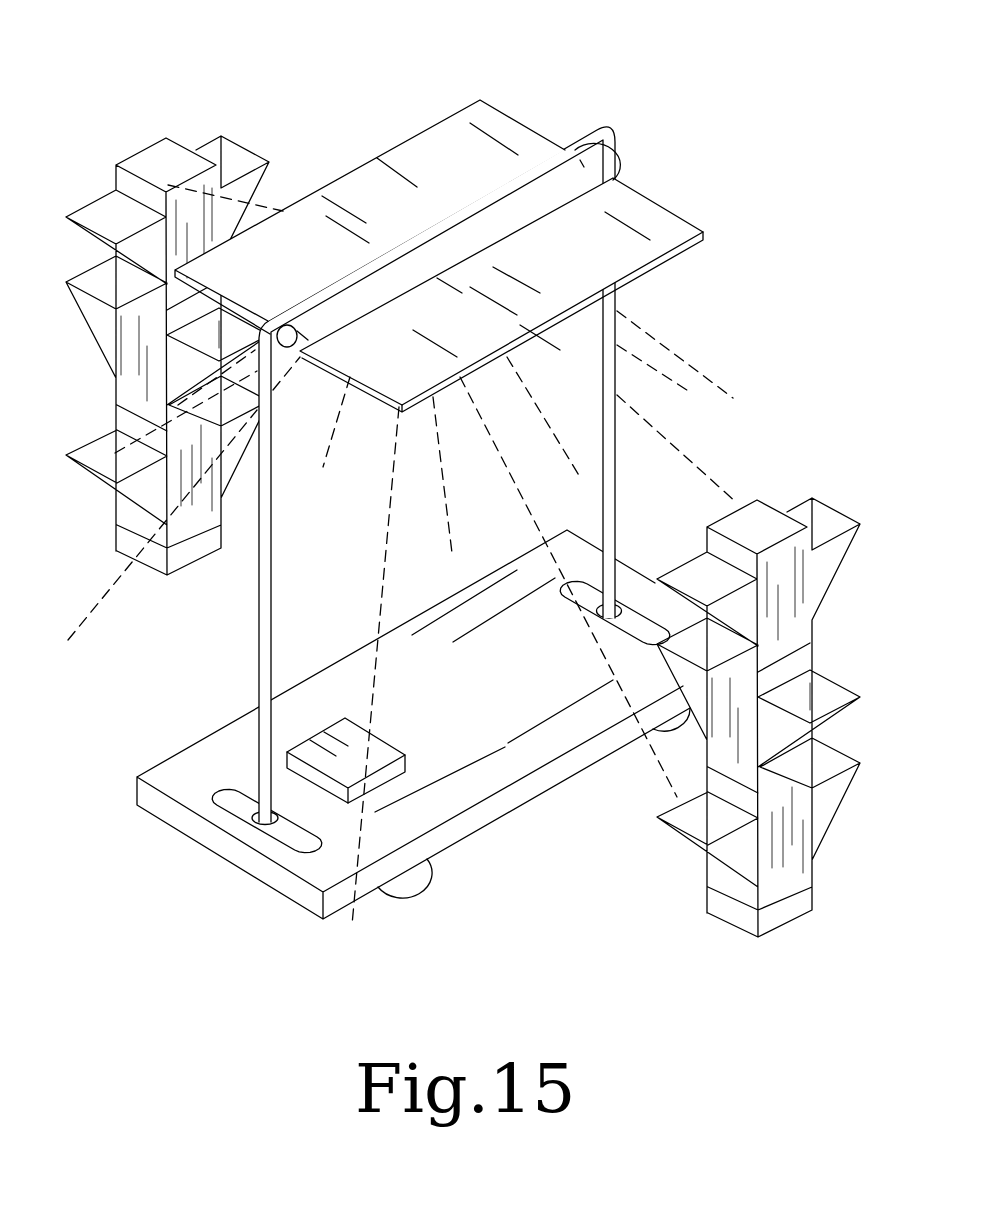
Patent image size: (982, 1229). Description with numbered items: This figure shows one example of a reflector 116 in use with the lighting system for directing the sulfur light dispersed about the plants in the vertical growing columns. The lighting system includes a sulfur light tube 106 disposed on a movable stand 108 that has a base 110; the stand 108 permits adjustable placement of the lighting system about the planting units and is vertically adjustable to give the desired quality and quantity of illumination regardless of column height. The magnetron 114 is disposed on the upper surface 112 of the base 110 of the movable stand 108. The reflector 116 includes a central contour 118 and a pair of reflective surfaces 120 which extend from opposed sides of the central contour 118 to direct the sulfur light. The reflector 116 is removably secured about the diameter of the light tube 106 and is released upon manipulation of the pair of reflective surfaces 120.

The sulfur light tube 106 is at (285, 350).
The movable stand 108 is at (258, 660).
The base 110 is at (413, 724).
The upper surface 112 is at (503, 682).
The magnetron 114 is at (375, 730).
The reflector 116 is at (508, 249).
The central contour 118 is at (543, 198).
The reflective surfaces 120 is at (229, 300).